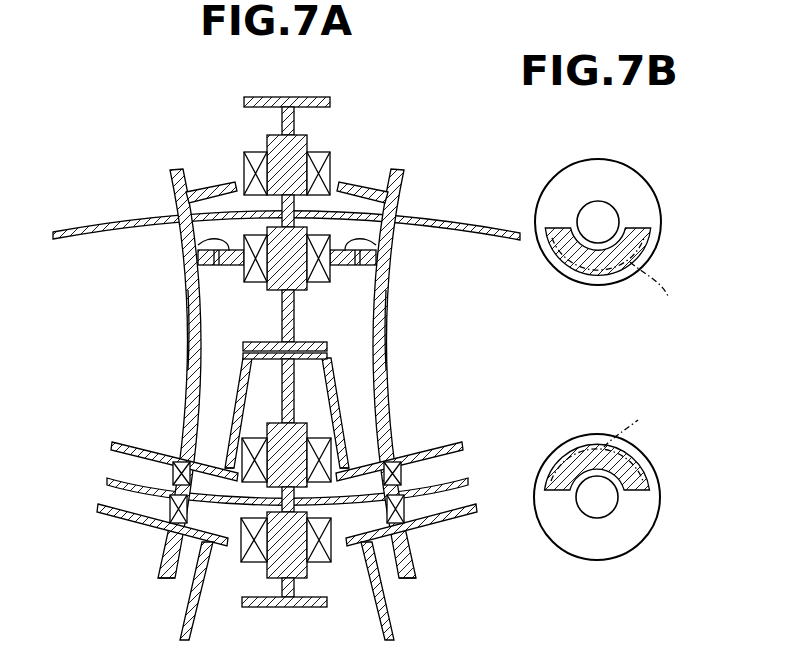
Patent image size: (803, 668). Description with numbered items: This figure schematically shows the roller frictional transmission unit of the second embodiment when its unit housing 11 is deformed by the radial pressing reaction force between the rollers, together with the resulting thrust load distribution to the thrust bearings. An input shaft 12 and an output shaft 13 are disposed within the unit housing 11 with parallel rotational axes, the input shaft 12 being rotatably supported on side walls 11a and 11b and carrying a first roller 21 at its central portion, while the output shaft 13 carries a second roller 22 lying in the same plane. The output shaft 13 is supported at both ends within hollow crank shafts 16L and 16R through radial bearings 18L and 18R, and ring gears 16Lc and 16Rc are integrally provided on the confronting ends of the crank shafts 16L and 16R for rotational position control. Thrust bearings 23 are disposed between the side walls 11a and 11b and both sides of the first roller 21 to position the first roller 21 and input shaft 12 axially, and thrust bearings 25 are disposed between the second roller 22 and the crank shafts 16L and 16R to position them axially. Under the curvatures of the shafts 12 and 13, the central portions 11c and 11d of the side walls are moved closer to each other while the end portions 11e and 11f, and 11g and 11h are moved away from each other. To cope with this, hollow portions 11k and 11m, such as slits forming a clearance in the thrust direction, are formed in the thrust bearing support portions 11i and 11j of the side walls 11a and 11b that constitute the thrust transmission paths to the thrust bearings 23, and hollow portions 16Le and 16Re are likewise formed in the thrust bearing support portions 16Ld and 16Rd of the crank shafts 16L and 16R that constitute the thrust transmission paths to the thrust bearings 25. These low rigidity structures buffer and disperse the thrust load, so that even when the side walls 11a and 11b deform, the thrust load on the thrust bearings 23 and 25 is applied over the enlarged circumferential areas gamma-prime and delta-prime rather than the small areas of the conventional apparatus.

In FIG. 7A, the unit housing 11 is at (287, 336).
In FIG. 7A, the side wall 11a is at (180, 345).
In FIG. 7A, the side wall 11b is at (394, 345).
In FIG. 7A, the central portion 11c is at (188, 308).
In FIG. 7A, the central portion 11d is at (386, 308).
In FIG. 7A, the end portion 11e is at (185, 193).
In FIG. 7A, the end portion 11f is at (163, 568).
In FIG. 7A, the end portion 11g is at (400, 198).
In FIG. 7A, the end portion 11h is at (412, 556).
In FIG. 7A, the thrust bearing support portion 11i is at (210, 244).
In FIG. 7A, the thrust bearing support portion 11j is at (364, 244).
In FIG. 7A, the hollow portion 11k is at (200, 262).
In FIG. 7A, the hollow portion 11m is at (386, 262).
In FIG. 7A, the input shaft 12 is at (75, 231).
In FIG. 7A, the output shaft 13 is at (150, 498).
In FIG. 7A, the crank shaft 16L is at (141, 411).
In FIG. 7A, the ring gear 16Lc is at (186, 638).
In FIG. 7A, the thrust bearing support portion 16Ld is at (237, 462).
In FIG. 7A, the hollow portion 16Le is at (226, 470).
In FIG. 7A, the crank shaft 16R is at (437, 411).
In FIG. 7A, the ring gear 16Rc is at (386, 636).
In FIG. 7A, the thrust bearing support portion 16Rd is at (345, 460).
In FIG. 7A, the hollow portion 16Re is at (350, 468).
In FIG. 7A, the radial bearing 18L is at (160, 470).
In FIG. 7A, the radial bearing 18R is at (405, 476).
In FIG. 7A, the first roller 21 is at (262, 96).
In FIG. 7A, the second roller 22 is at (272, 607).
In FIG. 7A, the thrust bearing 23 is at (243, 155).
In FIG. 7B, the thrust bearing 23 is at (658, 172).
In FIG. 7A, the thrust bearing 25 is at (250, 563).
In FIG. 7B, the thrust bearing 25 is at (660, 543).